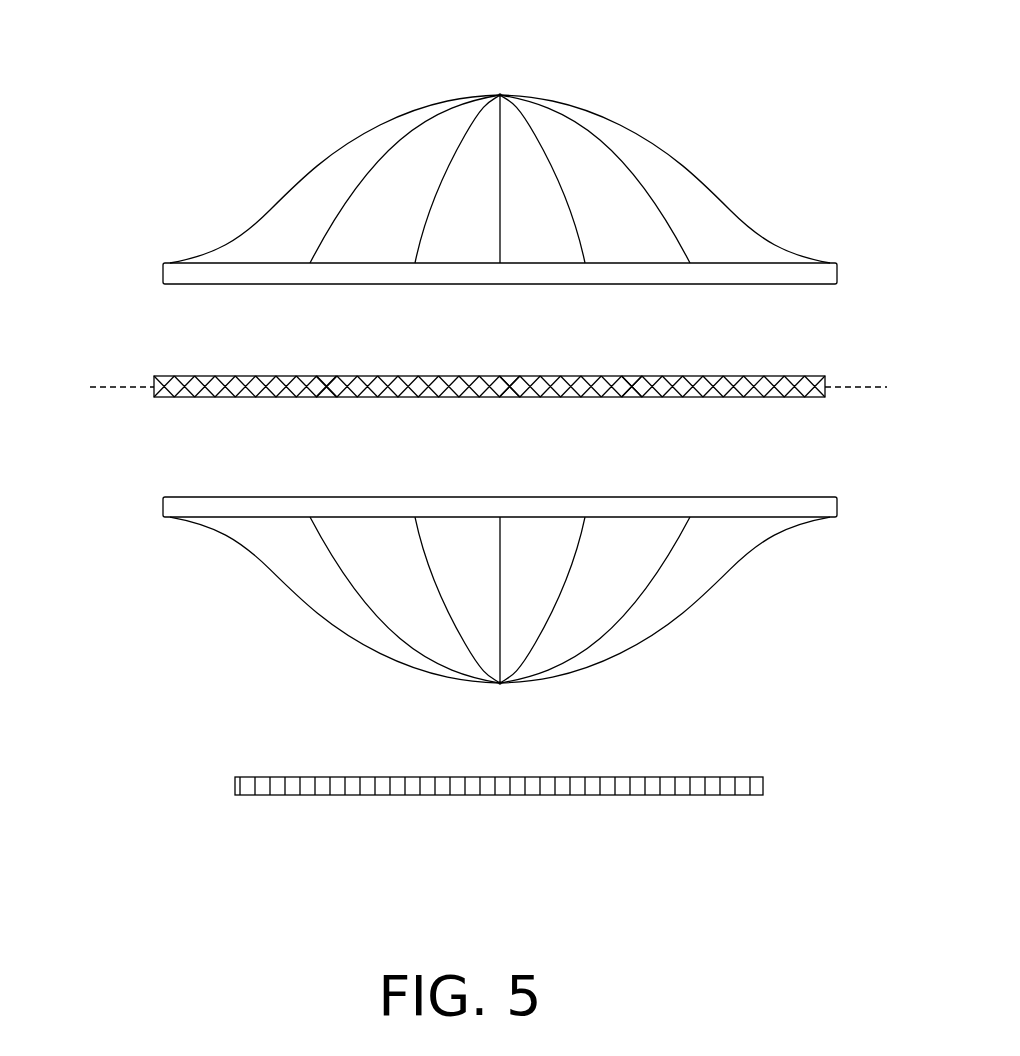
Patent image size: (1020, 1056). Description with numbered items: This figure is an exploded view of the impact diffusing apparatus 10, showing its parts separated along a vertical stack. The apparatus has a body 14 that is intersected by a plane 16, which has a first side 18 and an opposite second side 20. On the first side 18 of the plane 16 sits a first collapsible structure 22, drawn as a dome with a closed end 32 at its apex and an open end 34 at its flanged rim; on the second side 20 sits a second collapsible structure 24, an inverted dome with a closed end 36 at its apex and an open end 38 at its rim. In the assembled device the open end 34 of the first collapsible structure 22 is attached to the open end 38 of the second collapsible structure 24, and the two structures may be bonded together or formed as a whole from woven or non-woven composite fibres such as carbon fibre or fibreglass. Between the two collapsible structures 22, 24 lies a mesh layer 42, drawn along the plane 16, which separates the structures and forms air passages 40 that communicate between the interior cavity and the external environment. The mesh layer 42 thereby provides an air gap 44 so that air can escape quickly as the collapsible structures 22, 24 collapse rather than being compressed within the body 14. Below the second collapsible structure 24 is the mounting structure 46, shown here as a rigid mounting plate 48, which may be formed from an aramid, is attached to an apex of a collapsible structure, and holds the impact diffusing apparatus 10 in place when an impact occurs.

The impact diffusing apparatus 10 is at (250, 57).
The body 14 is at (500, 145).
The plane 16 is at (125, 387).
The first side 18 is at (514, 390).
The second side 20 is at (803, 408).
The first collapsible structure 22 is at (705, 208).
The second collapsible structure 24 is at (500, 633).
The closed end 32 is at (500, 95).
The open end 34 is at (175, 276).
The closed end 36 is at (508, 686).
The open end 38 is at (165, 518).
The air passages 40 is at (335, 385).
The mesh layer 42 is at (505, 385).
The air gap 44 is at (627, 385).
The mounting structure 46 is at (516, 799).
The rigid mounting plate 48 is at (637, 783).